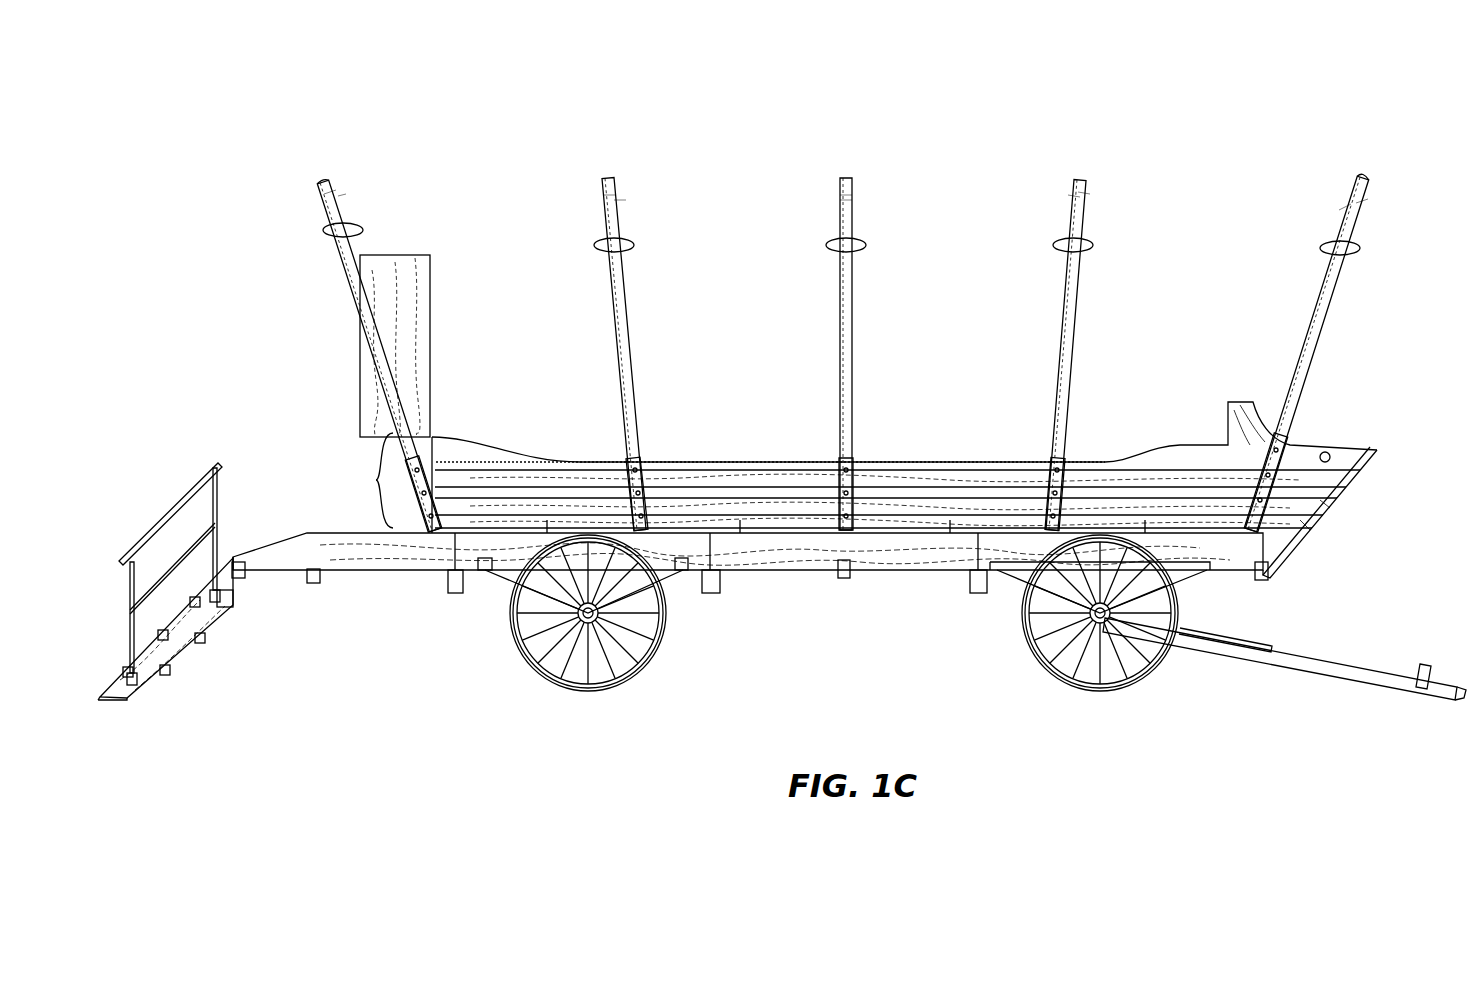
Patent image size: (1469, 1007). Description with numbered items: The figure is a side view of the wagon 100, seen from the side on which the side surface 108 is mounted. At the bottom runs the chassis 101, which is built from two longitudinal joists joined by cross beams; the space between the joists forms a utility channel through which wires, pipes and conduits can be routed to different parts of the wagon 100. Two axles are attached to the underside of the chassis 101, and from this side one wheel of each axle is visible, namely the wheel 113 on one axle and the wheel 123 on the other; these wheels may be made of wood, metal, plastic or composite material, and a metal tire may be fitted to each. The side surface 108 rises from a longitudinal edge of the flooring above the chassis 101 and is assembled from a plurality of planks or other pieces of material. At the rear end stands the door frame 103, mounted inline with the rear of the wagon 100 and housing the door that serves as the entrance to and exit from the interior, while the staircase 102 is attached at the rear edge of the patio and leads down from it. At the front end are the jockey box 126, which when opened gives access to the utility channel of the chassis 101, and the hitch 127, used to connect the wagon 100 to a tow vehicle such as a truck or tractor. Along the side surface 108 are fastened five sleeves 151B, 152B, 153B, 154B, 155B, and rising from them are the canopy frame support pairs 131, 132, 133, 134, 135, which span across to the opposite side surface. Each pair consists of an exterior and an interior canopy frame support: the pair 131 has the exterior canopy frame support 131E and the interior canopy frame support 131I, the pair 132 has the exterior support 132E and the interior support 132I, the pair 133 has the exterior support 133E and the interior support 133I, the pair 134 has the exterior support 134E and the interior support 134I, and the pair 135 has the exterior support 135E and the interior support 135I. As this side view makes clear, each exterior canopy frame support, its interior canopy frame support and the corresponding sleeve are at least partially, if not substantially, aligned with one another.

The wagon 100 is at (897, 125).
The chassis 101 is at (795, 562).
The staircase 102 is at (172, 650).
The door frame 103 is at (423, 307).
The side surface 108 is at (376, 480).
The wheel 113 is at (1130, 691).
The wheel 123 is at (565, 691).
The jockey box 126 is at (1332, 512).
The hitch 127 is at (1320, 668).
The canopy frame support pair 131 is at (325, 235).
The exterior canopy frame support 131E is at (330, 197).
The interior canopy frame support 131I is at (342, 195).
The canopy frame support pair 132 is at (597, 240).
The exterior canopy frame support 132E is at (610, 197).
The interior canopy frame support 132I is at (620, 200).
The canopy frame support pair 133 is at (867, 242).
The exterior canopy frame support 133E is at (842, 197).
The interior canopy frame support 133I is at (853, 200).
The canopy frame support pair 134 is at (1092, 247).
The exterior canopy frame support 134E is at (1087, 193).
The interior canopy frame support 134I is at (1072, 197).
The canopy frame support pair 135 is at (1355, 252).
The exterior canopy frame support 135E is at (1363, 197).
The interior canopy frame support 135I is at (1345, 207).
The sleeve 151B is at (425, 445).
The sleeve 152B is at (640, 472).
The sleeve 153B is at (830, 475).
The sleeve 154B is at (1060, 480).
The sleeve 155B is at (1280, 445).